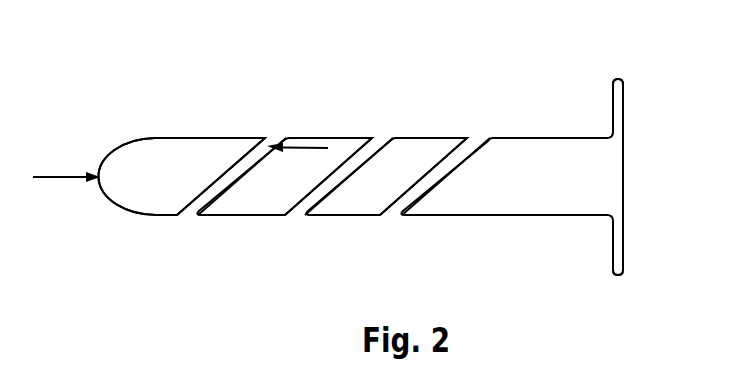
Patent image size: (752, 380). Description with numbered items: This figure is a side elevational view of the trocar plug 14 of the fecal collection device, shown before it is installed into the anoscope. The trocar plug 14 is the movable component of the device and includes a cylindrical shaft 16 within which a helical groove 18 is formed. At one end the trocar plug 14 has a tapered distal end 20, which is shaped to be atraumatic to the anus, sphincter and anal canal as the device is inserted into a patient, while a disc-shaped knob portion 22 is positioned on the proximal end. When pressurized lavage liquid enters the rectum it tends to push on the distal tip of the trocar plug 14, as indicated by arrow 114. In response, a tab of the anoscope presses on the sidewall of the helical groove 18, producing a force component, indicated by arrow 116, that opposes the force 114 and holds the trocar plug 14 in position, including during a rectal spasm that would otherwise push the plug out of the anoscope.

The trocar plug 14 is at (184, 76).
The cylindrical shaft 16 is at (477, 217).
The helical groove 18 is at (384, 138).
The tapered distal end 20 is at (133, 214).
The disc-shaped knob portion 22 is at (620, 78).
The arrow indicating force of lavage liquid 114 is at (52, 179).
The arrow indicating opposing force component 116 is at (303, 146).